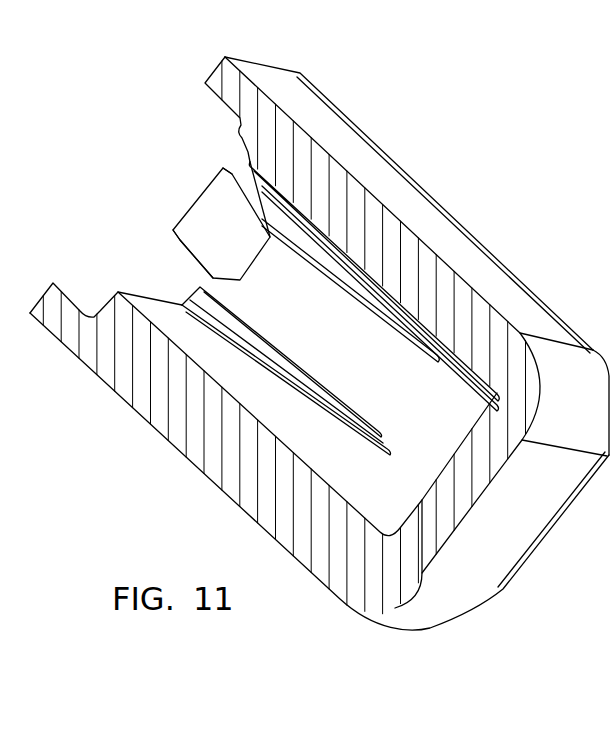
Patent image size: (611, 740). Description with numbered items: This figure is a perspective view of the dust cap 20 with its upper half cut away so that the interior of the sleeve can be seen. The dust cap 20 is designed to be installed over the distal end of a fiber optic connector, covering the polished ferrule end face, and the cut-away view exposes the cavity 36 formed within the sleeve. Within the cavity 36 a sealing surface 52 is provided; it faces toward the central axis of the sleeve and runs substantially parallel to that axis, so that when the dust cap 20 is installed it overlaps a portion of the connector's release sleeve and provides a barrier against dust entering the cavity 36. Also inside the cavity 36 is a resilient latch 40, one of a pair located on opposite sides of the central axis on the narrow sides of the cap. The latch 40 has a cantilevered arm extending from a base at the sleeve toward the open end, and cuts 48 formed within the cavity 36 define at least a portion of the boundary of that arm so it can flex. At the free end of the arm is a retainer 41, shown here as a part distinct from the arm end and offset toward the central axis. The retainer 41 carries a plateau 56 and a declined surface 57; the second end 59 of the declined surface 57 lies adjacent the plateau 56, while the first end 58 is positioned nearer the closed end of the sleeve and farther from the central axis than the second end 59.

The dust cap 20 is at (525, 186).
The cavity 36 is at (428, 425).
The resilient latch 40 is at (205, 230).
The retainer 41 is at (222, 203).
The cuts 48 is at (257, 320).
The sealing surface 52 is at (80, 298).
The plateau 56 is at (203, 252).
The declined surface 57 is at (257, 240).
The first end of the declined surface 58 is at (277, 243).
The second end of the declined surface 59 is at (240, 238).